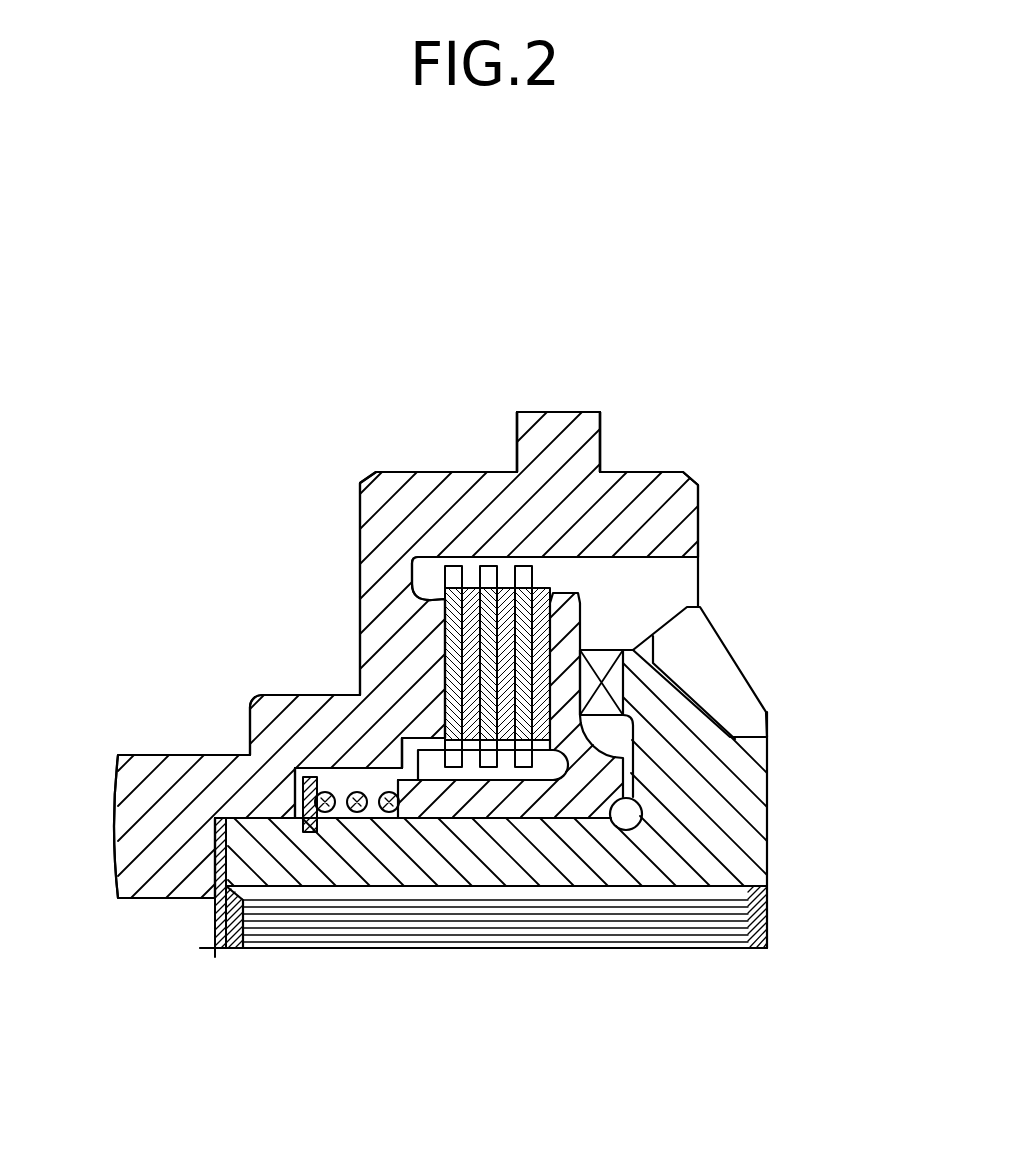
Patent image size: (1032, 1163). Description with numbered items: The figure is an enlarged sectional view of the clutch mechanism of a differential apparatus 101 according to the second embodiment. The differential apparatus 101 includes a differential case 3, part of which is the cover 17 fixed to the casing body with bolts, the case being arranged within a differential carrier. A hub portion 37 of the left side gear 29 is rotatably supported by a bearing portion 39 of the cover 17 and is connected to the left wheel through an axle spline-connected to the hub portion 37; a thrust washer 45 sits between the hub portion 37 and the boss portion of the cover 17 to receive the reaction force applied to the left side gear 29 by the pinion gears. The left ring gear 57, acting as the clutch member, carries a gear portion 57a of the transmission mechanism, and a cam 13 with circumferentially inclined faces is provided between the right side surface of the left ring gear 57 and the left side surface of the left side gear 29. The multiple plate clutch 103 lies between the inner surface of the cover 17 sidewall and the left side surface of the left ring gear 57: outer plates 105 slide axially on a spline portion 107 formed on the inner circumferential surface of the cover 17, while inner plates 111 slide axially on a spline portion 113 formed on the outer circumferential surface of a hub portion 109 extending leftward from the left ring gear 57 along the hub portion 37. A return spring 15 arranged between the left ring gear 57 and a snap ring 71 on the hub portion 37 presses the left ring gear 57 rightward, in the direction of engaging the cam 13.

The differential apparatus 101 is at (328, 333).
The cover 17 is at (553, 408).
The differential case 3 is at (558, 442).
The multiple plate clutch 103 is at (432, 460).
The outer plates 105 is at (413, 599).
The spline portion 107 is at (465, 567).
The hub portion 109 is at (508, 805).
The inner plates 111 is at (433, 720).
The spline portion 113 is at (450, 770).
The gear portion 57a is at (568, 596).
The left ring gear 57 is at (585, 822).
The cam 13 is at (613, 632).
The left side gear 29 is at (722, 683).
The hub portion 37 is at (707, 870).
The bearing portion 39 is at (268, 823).
The thrust washers 45 is at (224, 948).
The snap ring 71 is at (310, 832).
The return spring 15 is at (360, 823).